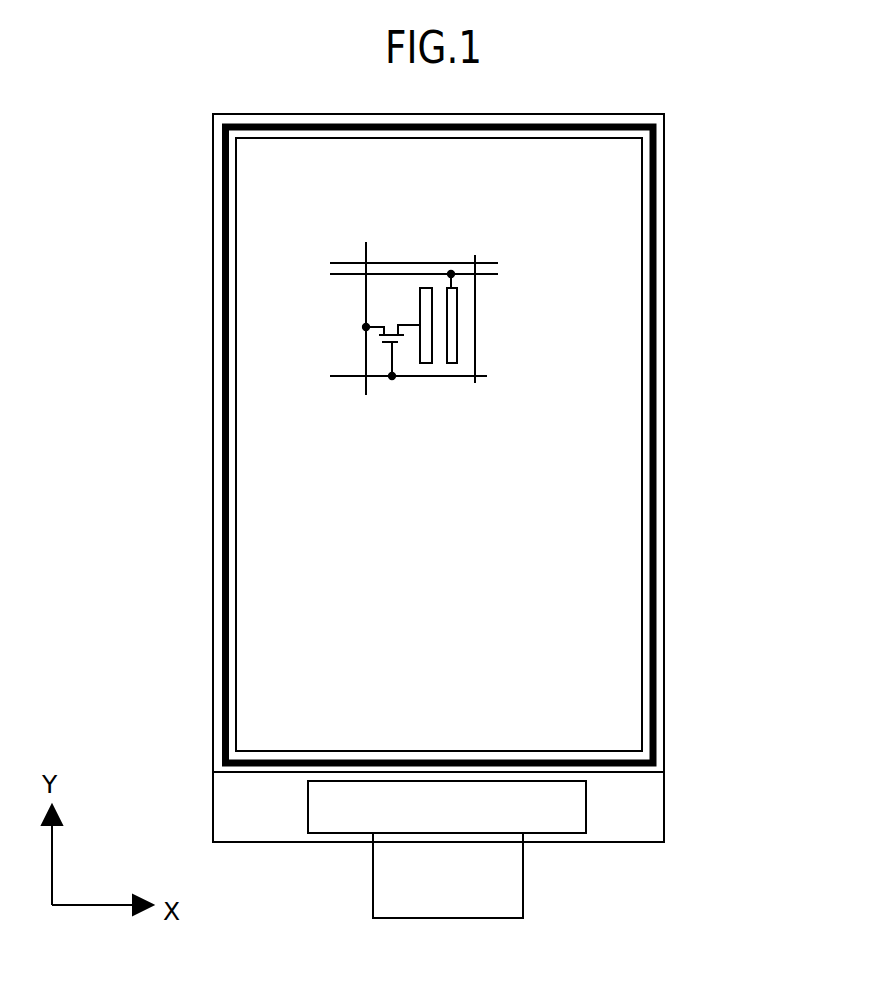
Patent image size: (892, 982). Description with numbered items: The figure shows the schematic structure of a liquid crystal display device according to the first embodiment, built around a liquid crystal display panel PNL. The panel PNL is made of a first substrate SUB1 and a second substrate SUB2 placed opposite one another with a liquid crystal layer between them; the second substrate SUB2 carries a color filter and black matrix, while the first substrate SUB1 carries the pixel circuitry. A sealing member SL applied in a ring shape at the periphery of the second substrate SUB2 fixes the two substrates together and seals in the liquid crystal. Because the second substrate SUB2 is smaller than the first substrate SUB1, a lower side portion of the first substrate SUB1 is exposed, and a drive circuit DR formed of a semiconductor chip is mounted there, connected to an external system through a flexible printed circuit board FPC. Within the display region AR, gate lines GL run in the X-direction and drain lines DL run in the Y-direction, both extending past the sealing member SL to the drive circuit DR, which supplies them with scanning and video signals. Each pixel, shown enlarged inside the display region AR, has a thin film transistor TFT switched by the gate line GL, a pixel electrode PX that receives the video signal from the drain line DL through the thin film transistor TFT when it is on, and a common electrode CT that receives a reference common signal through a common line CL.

The liquid crystal display panel PNL is at (511, 443).
The first substrate SUB1 is at (663, 811).
The second substrate SUB2 is at (665, 602).
The sealing member SL is at (655, 516).
The display region AR is at (632, 363).
The gate line GL is at (403, 261).
The drain line DL is at (473, 257).
The common line CL is at (352, 273).
The thin film transistor TFT is at (375, 345).
The pixel electrode PX is at (425, 364).
The common electrode CT is at (453, 365).
The drive circuit DR is at (327, 831).
The flexible printed circuit board FPC is at (522, 865).